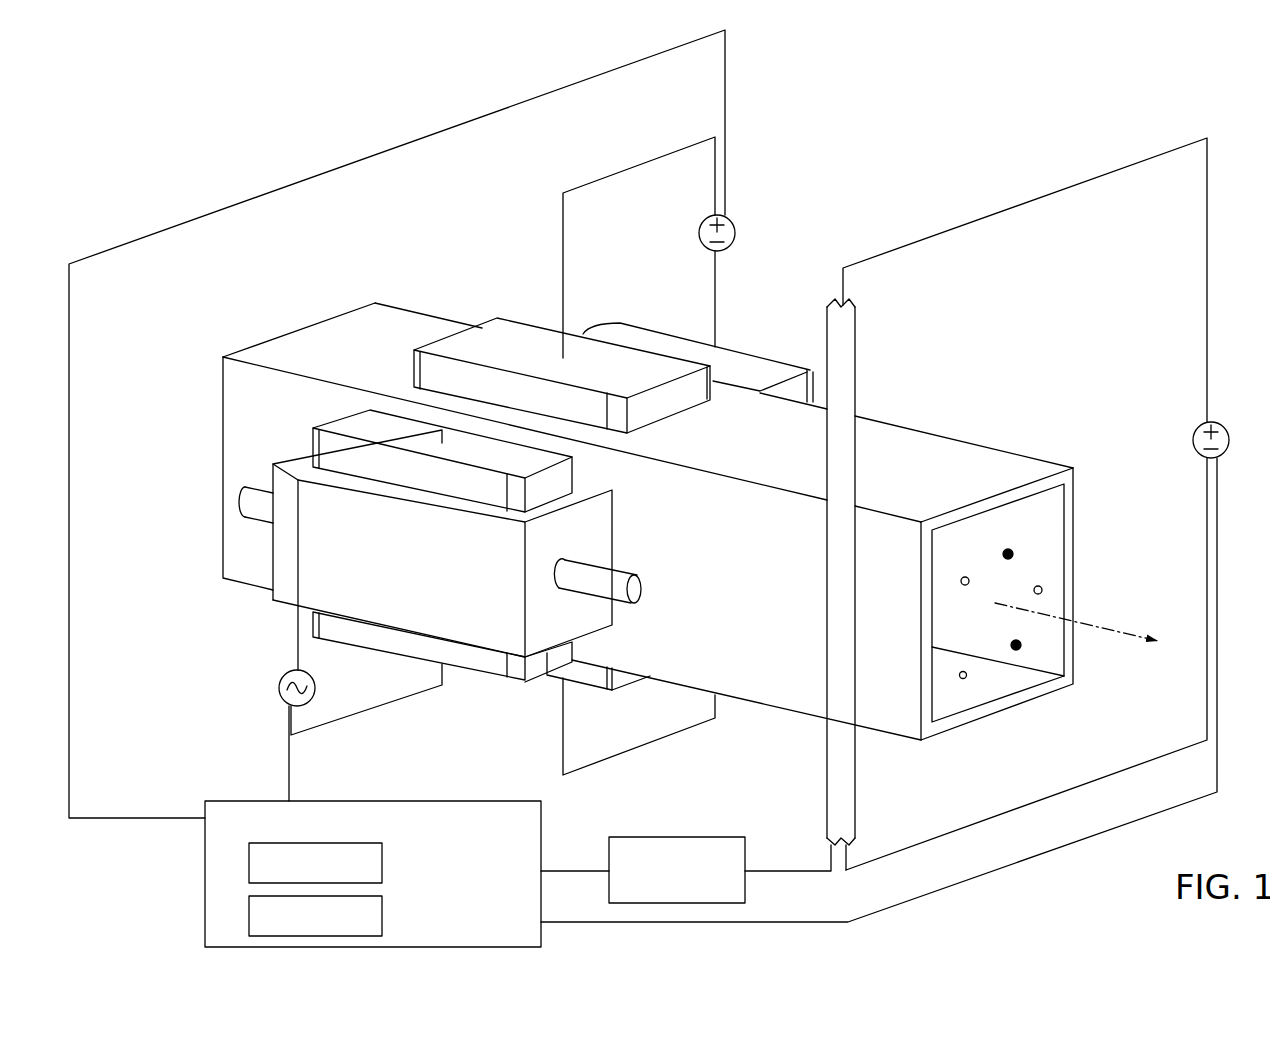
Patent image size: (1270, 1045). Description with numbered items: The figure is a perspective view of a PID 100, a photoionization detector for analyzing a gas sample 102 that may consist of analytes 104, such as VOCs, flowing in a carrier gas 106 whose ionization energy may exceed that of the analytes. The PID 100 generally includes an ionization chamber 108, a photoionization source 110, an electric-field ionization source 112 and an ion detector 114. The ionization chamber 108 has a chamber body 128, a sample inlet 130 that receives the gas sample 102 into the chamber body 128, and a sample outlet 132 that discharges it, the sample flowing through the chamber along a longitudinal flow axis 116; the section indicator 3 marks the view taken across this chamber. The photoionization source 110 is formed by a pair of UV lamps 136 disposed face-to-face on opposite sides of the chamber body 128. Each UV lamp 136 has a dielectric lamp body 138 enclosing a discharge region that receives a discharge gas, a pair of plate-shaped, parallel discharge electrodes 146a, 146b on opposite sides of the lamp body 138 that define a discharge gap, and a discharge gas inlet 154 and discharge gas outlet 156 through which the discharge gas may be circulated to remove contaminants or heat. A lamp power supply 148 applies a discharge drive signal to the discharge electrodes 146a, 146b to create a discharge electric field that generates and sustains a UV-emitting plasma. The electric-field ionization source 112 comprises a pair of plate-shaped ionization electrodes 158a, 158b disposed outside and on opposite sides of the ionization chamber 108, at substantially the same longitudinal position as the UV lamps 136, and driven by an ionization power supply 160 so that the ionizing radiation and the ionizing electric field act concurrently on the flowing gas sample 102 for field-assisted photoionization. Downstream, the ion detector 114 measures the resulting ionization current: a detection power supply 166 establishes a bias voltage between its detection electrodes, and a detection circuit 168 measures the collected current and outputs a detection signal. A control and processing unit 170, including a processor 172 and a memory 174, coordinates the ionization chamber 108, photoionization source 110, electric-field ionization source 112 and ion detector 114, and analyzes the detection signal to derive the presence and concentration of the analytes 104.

The PID 100 is at (771, 227).
The gas sample 102 is at (1033, 564).
The analytes 104 is at (963, 681).
The carrier gas 106 is at (1016, 653).
The ionization chamber 108 is at (745, 662).
The photoionization source 110 is at (432, 702).
The electric-field ionization source 112 is at (527, 296).
The ion detector 114 is at (966, 419).
The longitudinal flow axis 116 is at (1124, 636).
The chamber body 128 is at (999, 475).
The sample inlet 130 is at (298, 328).
The sample outlet 132 is at (1098, 467).
The UV lamps 136 is at (750, 333).
The lamp body 138 is at (285, 556).
The discharge electrode 146a is at (332, 452).
The discharge electrode 146b is at (480, 661).
The lamp power supply 148 is at (279, 694).
The discharge gas inlet 154 is at (252, 501).
The discharge gas outlet 156 is at (637, 593).
The ionization electrode 158a is at (633, 363).
The ionization electrode 158b is at (613, 679).
The ionization power supply 160 is at (699, 223).
The detection power supply 166 is at (1222, 428).
The detection circuit 168 is at (676, 836).
The control and processing unit 170 is at (336, 800).
The processor 172 is at (249, 863).
The memory 174 is at (249, 917).
The section view indicator 3 is at (203, 622).